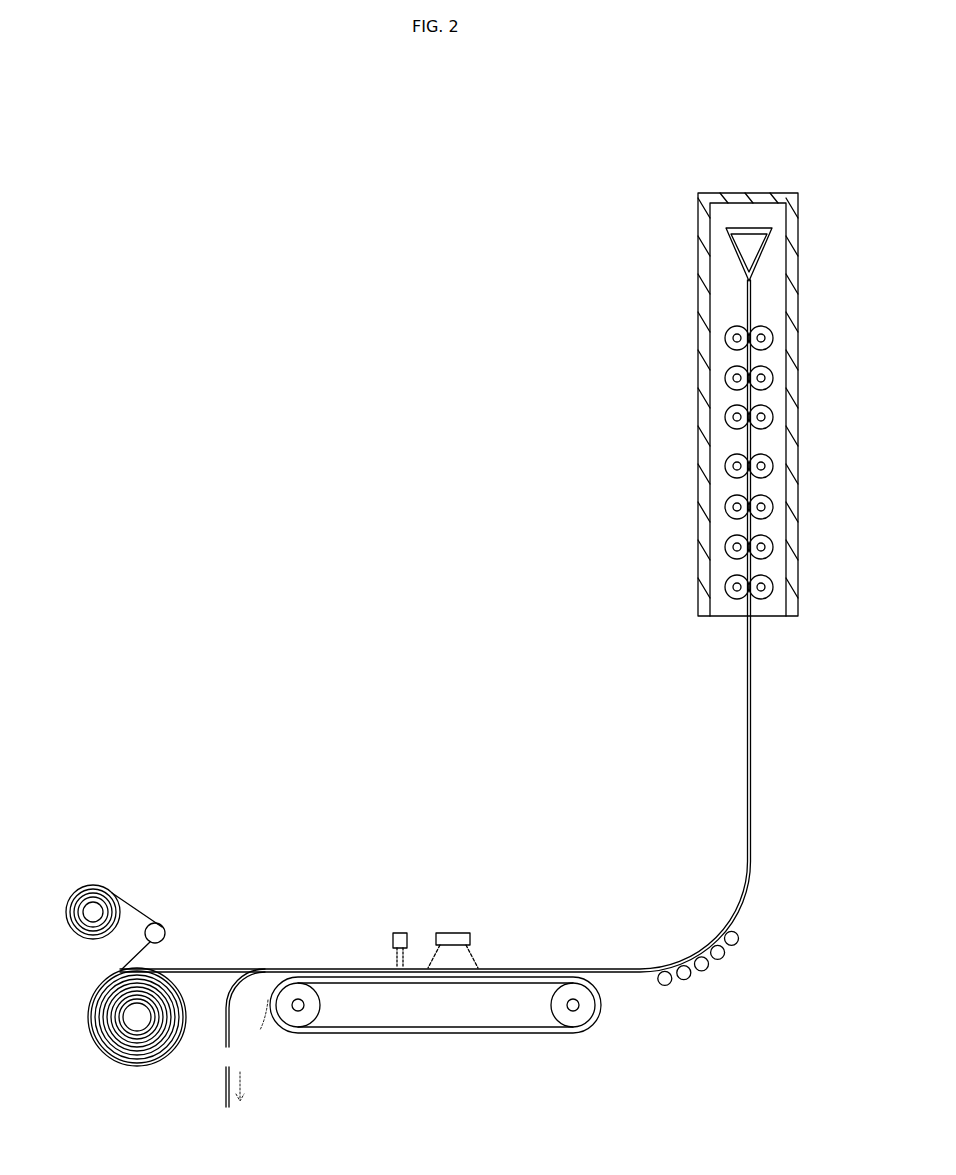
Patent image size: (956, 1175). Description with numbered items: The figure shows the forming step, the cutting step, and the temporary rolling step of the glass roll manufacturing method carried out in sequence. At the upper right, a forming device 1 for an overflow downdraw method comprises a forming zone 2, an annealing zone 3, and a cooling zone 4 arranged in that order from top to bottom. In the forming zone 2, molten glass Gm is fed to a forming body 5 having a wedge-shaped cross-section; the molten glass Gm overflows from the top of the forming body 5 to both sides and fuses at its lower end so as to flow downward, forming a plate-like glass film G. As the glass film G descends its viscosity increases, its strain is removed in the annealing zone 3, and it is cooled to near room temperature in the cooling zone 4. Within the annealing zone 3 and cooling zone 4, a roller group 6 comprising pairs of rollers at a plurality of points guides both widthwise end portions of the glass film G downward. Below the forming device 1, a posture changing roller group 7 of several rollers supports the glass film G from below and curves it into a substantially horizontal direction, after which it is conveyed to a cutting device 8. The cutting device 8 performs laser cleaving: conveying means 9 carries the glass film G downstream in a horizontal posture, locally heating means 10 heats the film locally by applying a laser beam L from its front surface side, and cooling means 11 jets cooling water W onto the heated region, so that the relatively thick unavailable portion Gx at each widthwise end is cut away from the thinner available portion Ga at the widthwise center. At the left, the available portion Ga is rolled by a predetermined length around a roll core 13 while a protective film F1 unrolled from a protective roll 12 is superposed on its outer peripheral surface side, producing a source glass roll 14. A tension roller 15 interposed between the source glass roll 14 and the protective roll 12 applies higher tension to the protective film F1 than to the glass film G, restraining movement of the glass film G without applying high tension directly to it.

The forming device 1 is at (742, 365).
The forming zone 2 is at (806, 212).
The annealing zone 3 is at (741, 381).
The cooling zone 4 is at (806, 450).
The forming body 5 is at (735, 258).
The roller group 6 is at (736, 379).
The posture changing roller group 7 is at (709, 973).
The cutting device 8 is at (432, 907).
The conveying means 9 is at (433, 1036).
The locally heating means 10 is at (469, 930).
The cooling means 11 is at (381, 930).
The protective roll 12 is at (94, 883).
The roll core 13 is at (137, 1030).
The source glass roll 14 is at (123, 1041).
The tension roller 15 is at (165, 930).
The glass film G is at (746, 733).
The molten glass Gm is at (750, 226).
The available portion Ga is at (224, 967).
The unavailable portion Gx is at (226, 1088).
The protective film F1 is at (138, 906).
The laser beam L is at (478, 961).
The cooling water W is at (394, 958).